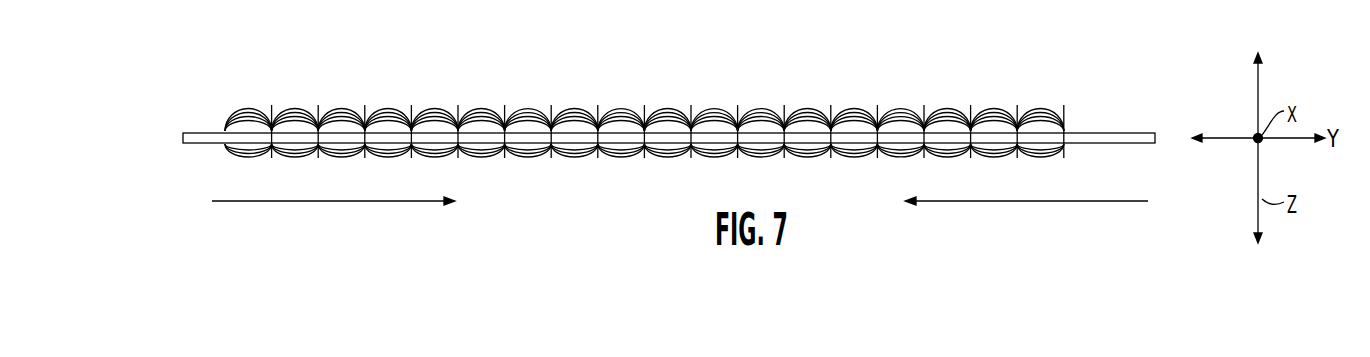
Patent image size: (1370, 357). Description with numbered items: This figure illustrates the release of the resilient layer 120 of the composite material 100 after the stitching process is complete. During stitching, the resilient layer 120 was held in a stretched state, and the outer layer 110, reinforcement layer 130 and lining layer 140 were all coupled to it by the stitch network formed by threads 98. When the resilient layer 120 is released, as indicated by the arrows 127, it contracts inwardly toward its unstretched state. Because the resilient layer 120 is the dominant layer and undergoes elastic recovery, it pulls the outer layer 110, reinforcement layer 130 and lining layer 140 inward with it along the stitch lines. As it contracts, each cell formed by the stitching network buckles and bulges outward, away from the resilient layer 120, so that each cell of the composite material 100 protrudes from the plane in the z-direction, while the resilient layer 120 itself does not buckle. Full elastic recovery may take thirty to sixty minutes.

The composite material 100 is at (228, 64).
The threads 98 is at (924, 108).
The outer layer 110 is at (1038, 110).
The resilient layer 120 is at (1106, 133).
The reinforcement layer 130 is at (995, 121).
The lining layer 140 is at (1046, 156).
The arrows 127 is at (378, 202).